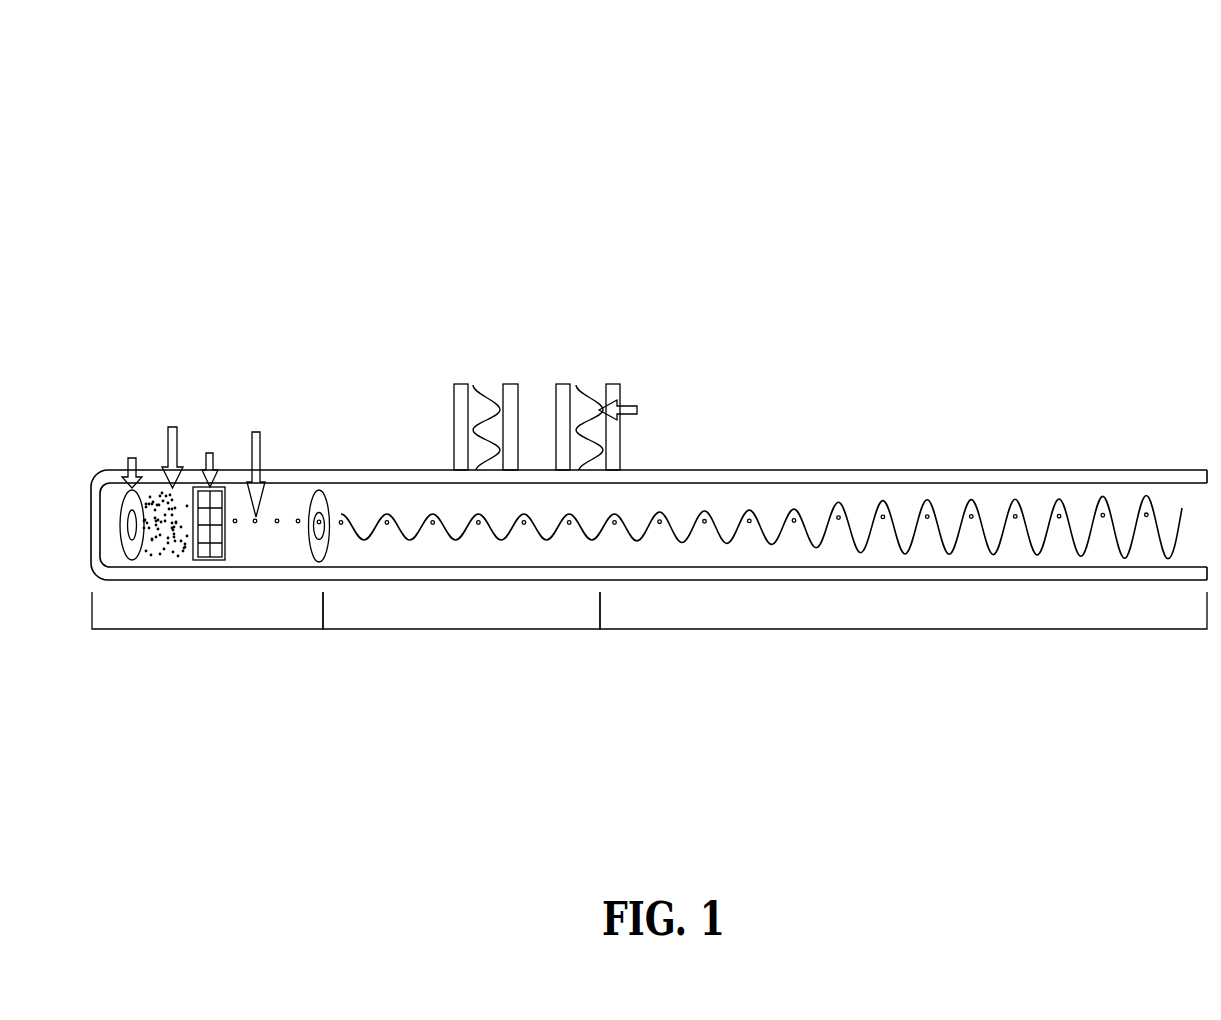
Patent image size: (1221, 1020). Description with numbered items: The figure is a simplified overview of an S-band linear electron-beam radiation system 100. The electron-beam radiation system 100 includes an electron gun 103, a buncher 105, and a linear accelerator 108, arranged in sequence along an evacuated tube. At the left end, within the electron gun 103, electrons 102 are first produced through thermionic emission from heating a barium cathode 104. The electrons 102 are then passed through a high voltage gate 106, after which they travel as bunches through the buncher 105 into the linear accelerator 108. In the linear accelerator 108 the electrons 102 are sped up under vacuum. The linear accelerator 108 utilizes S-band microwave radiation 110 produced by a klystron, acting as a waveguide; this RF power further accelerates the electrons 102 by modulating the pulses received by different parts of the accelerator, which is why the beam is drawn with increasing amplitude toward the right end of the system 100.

The electron-beam radiation system 100 is at (1026, 99).
The electrons 102 is at (177, 513).
The electron gun 103 is at (187, 521).
The barium cathode 104 is at (122, 525).
The buncher 105 is at (552, 630).
The high voltage gate 106 is at (225, 552).
The linear accelerator 108 is at (805, 630).
The microwave radiation 110 is at (592, 395).